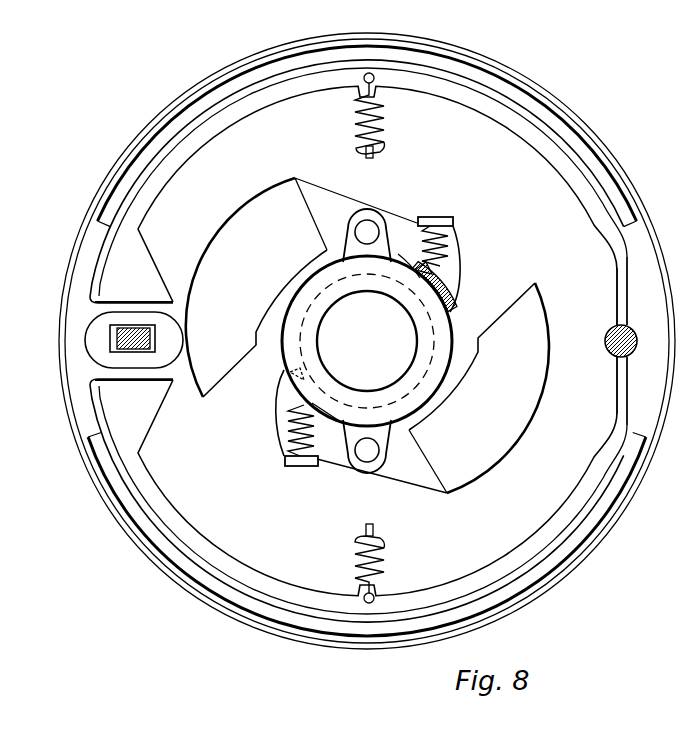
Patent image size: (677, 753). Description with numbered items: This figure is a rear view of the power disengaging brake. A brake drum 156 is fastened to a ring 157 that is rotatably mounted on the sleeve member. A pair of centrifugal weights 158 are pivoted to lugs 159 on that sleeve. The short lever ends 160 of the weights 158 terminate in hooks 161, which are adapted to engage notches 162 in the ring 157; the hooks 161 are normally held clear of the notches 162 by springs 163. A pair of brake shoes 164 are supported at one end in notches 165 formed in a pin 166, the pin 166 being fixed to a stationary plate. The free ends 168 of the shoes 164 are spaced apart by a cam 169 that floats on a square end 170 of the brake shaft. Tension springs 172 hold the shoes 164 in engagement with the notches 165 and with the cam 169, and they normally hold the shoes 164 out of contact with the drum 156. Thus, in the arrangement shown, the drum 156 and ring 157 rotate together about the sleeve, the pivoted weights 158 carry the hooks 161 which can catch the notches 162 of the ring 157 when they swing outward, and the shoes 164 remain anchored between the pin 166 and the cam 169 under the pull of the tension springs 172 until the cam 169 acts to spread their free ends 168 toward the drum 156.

The brake drum 156 is at (168, 566).
The ring 157 is at (443, 317).
The centrifugal weights 158 is at (493, 443).
The lugs 159 is at (356, 438).
The short lever ends 160 is at (443, 272).
The hooks 161 is at (430, 291).
The notches 162 is at (432, 276).
The springs 163 is at (297, 422).
The brake shoes 164 is at (160, 520).
The notches 165 is at (625, 323).
The pin 166 is at (636, 338).
The free ends 168 is at (113, 388).
The cam 169 is at (107, 358).
The square end 170 is at (110, 345).
The tension springs 172 is at (356, 561).